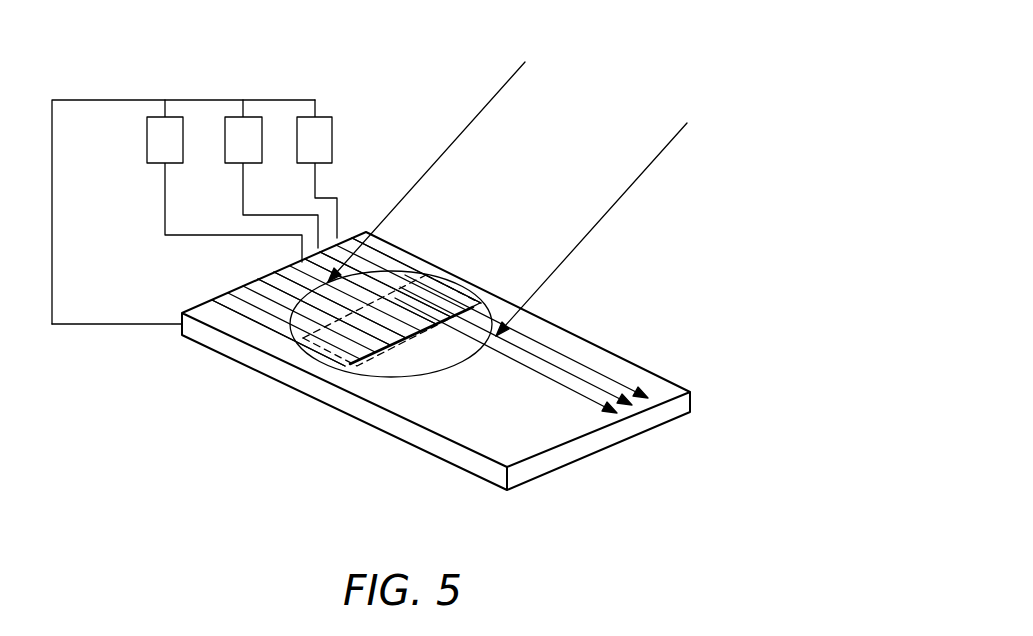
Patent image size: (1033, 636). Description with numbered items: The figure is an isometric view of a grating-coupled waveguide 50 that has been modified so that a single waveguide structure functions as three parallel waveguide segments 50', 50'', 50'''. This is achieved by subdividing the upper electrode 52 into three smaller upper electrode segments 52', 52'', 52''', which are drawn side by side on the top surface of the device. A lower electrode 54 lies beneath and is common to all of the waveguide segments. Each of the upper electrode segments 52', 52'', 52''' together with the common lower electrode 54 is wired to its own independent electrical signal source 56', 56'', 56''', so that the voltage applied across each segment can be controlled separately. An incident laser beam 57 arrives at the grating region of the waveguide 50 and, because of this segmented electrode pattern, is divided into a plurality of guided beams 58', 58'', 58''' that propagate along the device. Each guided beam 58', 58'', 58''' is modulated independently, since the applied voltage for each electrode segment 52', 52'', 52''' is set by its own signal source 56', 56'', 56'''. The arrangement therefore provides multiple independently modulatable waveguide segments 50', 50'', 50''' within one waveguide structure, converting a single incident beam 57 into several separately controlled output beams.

The grating-coupled waveguide 50 is at (392, 258).
The parallel waveguide segment 50' is at (402, 261).
The parallel waveguide segment 50'' is at (467, 255).
The parallel waveguide segment 50''' is at (441, 295).
The upper electrode 52 is at (294, 302).
The upper electrode segment 52' is at (308, 372).
The upper electrode segment 52'' is at (355, 373).
The upper electrode segment 52''' is at (400, 376).
The lower electrode 54 is at (273, 322).
The independent electrical signal source 56' is at (183, 212).
The independent electrical signal source 56'' is at (252, 174).
The independent electrical signal source 56''' is at (353, 162).
The incident laser beam 57 is at (715, 112).
The guided beam 58' is at (524, 349).
The guided beam 58'' is at (547, 346).
The guided beam 58''' is at (572, 336).